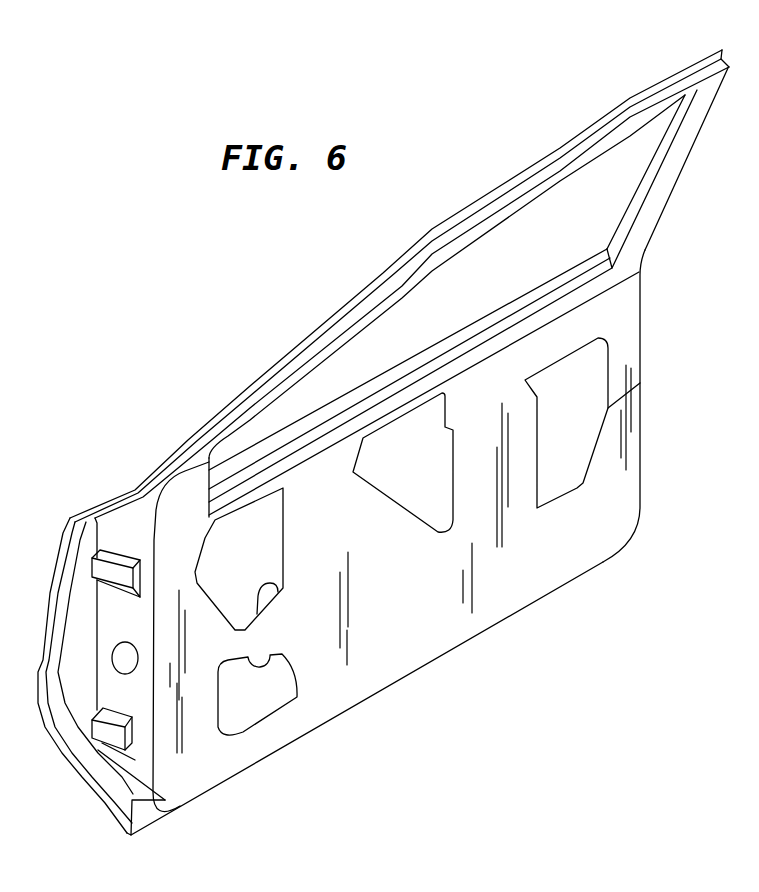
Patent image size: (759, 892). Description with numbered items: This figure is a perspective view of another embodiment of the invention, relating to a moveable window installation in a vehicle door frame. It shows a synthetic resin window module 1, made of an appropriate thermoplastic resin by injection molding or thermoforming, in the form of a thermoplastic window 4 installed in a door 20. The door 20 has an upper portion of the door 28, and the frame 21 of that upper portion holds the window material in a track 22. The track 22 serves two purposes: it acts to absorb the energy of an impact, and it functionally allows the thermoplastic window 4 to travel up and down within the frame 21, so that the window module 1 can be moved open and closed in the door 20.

The window module 1 is at (647, 84).
The thermoplastic window 4 is at (500, 275).
The door 20 is at (279, 353).
The frame 21 is at (668, 175).
The track 22 is at (640, 188).
The upper portion of the door 28 is at (556, 150).